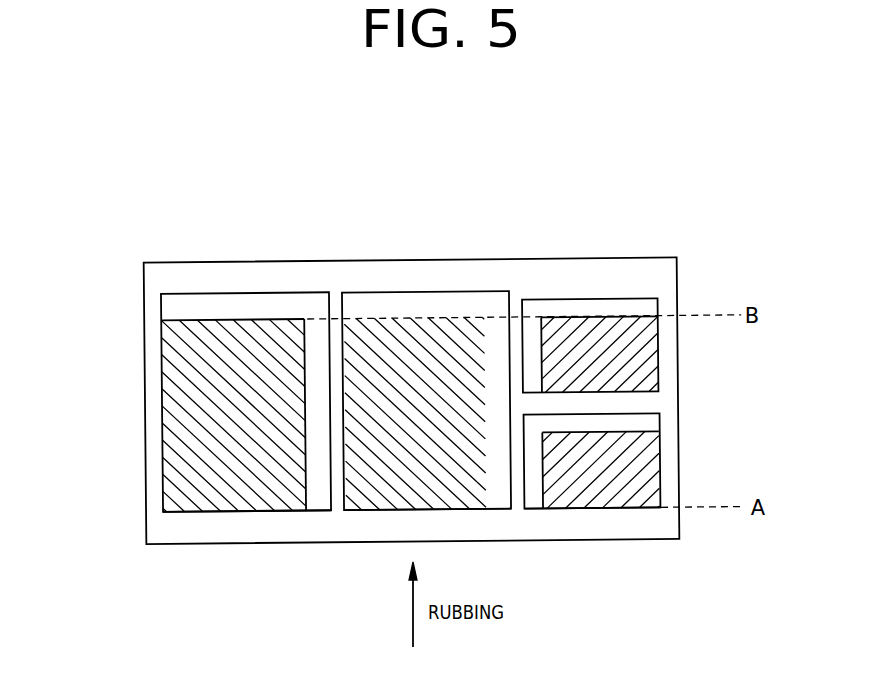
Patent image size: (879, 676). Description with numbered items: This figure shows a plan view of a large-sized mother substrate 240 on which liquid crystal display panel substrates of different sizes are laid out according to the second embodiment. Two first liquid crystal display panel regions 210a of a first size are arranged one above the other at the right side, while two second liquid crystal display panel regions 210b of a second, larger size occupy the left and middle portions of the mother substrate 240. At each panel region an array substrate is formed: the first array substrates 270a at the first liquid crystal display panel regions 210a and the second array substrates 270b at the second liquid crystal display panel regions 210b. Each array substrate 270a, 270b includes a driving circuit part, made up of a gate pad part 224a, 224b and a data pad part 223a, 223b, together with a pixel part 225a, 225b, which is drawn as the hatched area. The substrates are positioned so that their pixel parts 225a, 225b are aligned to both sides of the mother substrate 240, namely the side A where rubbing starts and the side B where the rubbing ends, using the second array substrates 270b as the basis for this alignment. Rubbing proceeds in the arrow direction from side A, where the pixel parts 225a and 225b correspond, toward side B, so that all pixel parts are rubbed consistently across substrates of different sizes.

The mother substrate 240 is at (692, 236).
The second liquid crystal display panel region 210b is at (161, 383).
The first liquid crystal display panel region 210a is at (660, 352).
The pixel part 225b is at (253, 498).
The pixel part 225a is at (638, 497).
The gate pad part 224b is at (211, 307).
The data pad part 223b is at (316, 353).
The gate pad part 224a is at (532, 340).
The data pad part 223a is at (582, 308).
The second array substrate 270b is at (189, 512).
The first array substrate 270a is at (562, 508).